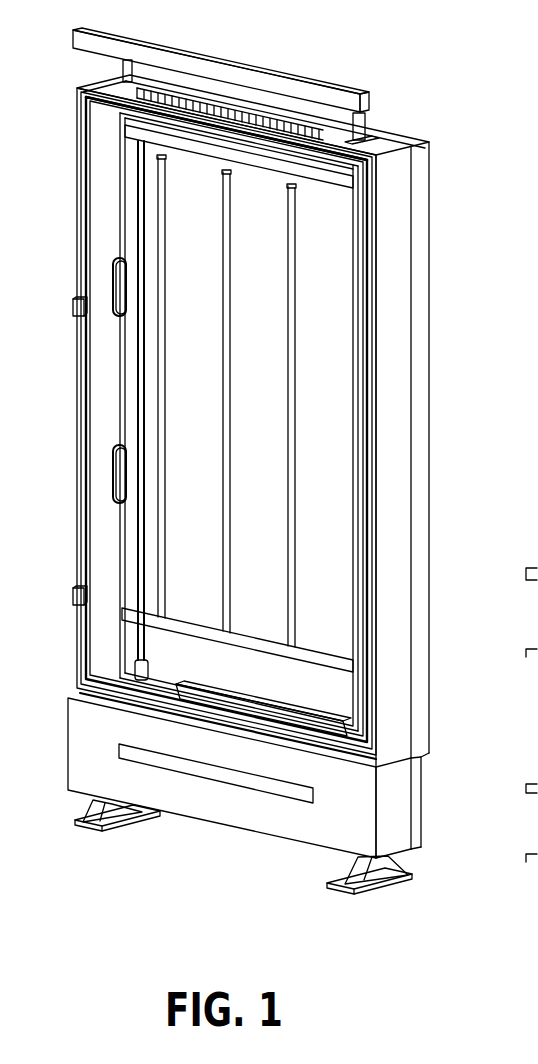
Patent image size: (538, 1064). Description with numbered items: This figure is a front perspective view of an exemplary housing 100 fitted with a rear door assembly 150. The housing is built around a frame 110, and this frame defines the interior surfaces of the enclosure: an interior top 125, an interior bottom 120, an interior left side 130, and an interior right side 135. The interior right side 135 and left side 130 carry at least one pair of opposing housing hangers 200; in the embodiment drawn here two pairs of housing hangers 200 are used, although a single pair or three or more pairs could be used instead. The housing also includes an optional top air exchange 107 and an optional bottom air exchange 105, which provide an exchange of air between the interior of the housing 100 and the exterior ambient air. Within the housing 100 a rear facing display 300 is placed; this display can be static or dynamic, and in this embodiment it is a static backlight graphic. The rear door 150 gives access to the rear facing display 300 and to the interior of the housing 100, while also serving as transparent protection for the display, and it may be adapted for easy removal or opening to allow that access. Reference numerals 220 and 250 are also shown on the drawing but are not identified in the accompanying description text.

The housing 100 is at (460, 103).
The bottom air exchange 105 is at (342, 713).
The top air exchange 107 is at (257, 119).
The frame 110 is at (395, 232).
The bottom surface 120 is at (134, 688).
The top surface 125 is at (114, 108).
The left side surface 130 is at (107, 347).
The right side surface 135 is at (345, 342).
The rear door assembly 150 is at (418, 272).
The housing hangers 200 is at (111, 277).
The side component 220 is at (537, 503).
The mounting bracket 250 is at (529, 563).
The rear facing display 300 is at (190, 572).